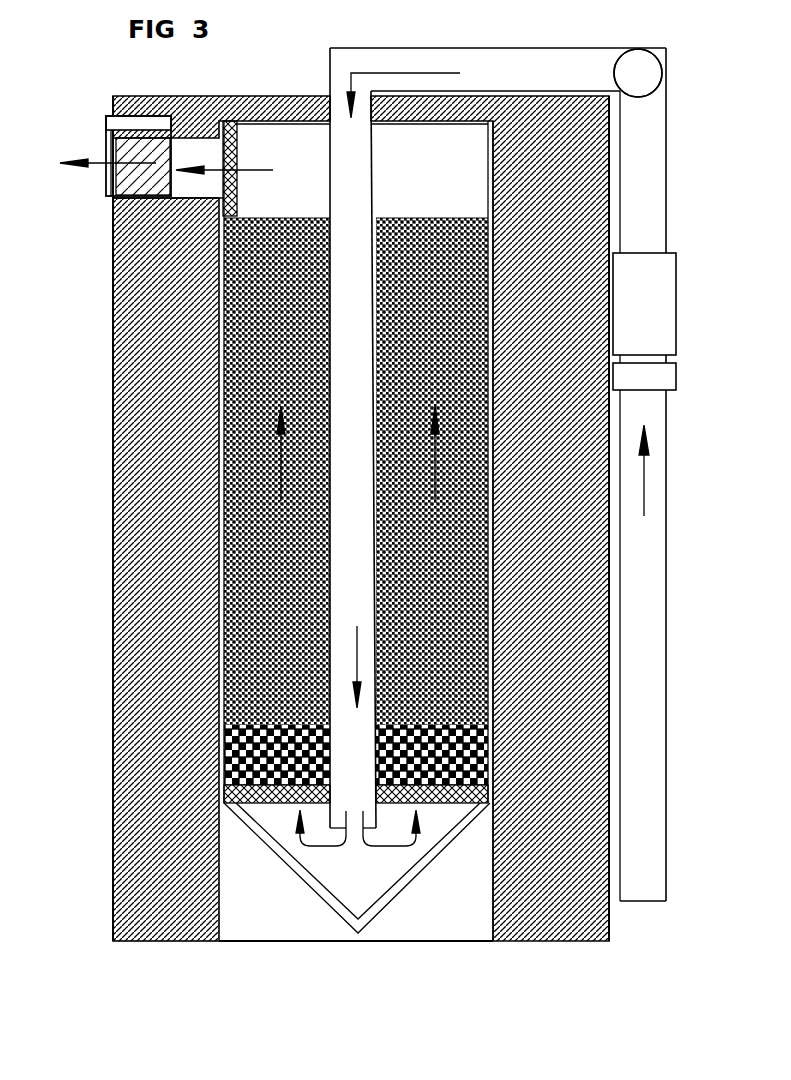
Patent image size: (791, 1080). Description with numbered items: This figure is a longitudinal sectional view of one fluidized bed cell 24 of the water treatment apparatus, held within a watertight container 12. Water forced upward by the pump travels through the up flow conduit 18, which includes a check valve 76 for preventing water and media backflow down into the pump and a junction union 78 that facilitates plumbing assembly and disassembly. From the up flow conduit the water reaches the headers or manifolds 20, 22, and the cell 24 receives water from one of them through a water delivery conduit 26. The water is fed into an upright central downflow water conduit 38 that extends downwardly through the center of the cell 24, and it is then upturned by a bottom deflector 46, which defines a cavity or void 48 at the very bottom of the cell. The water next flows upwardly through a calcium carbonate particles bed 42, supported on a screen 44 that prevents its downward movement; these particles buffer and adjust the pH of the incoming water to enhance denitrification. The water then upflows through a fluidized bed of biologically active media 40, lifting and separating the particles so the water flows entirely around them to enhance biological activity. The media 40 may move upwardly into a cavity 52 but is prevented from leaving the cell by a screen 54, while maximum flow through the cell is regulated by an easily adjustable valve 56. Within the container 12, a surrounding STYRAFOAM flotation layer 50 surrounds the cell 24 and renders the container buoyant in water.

The watertight container 12 is at (246, 84).
The up flow conduit 18 is at (657, 170).
The manifold 20 is at (642, 87).
The manifold 22 is at (638, 73).
The fluidized bed cell 24 is at (203, 427).
The water delivery conduit 26 is at (514, 40).
The central downflow water conduit 38 is at (338, 367).
The biologically active media 40 is at (449, 577).
The calcium carbonate particles bed 42 is at (273, 715).
The screen 44 is at (273, 796).
The bottom deflector 46 is at (407, 872).
The cavity 48 is at (445, 904).
The flotation layer 50 is at (566, 634).
The cavity 52 is at (283, 194).
The screen 54 is at (215, 176).
The valve 56 is at (100, 126).
The check valve 76 is at (668, 300).
The junction union 78 is at (668, 372).